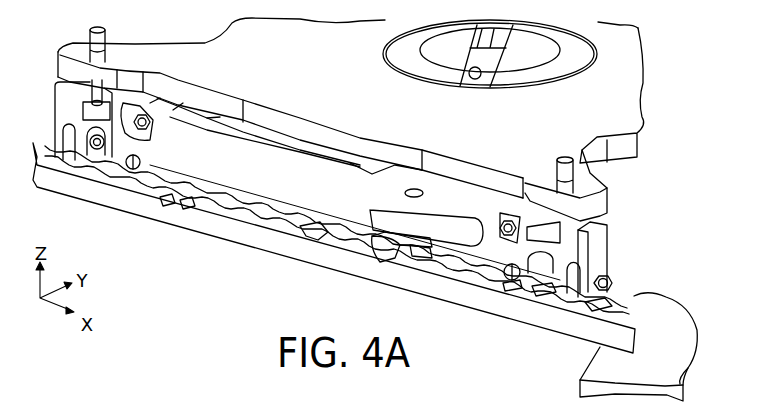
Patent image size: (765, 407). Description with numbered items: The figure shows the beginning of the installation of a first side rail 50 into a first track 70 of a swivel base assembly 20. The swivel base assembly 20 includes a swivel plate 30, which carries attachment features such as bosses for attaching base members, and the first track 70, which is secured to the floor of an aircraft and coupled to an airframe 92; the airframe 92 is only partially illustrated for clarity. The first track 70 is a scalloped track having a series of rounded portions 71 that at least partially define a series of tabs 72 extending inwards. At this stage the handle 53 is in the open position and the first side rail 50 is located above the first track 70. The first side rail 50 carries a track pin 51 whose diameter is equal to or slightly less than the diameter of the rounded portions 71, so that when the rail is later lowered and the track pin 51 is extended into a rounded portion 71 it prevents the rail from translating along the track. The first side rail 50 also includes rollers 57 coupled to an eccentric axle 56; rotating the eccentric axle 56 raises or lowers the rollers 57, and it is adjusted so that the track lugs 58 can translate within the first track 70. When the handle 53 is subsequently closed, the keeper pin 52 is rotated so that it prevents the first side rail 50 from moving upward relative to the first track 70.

The swivel base assembly 20 is at (663, 120).
The swivel plate 30 is at (293, 85).
The first side rail 50 is at (189, 163).
The track pin 51 is at (313, 236).
The keeper pin 52 is at (390, 262).
The handle 53 is at (423, 259).
The eccentric axle 56 is at (505, 287).
The roller 57 is at (538, 292).
The track lugs 58 is at (617, 297).
The first track 70 is at (260, 241).
The rounded portions 71 is at (168, 204).
The tabs 72 is at (186, 208).
The airframe 92 is at (621, 380).